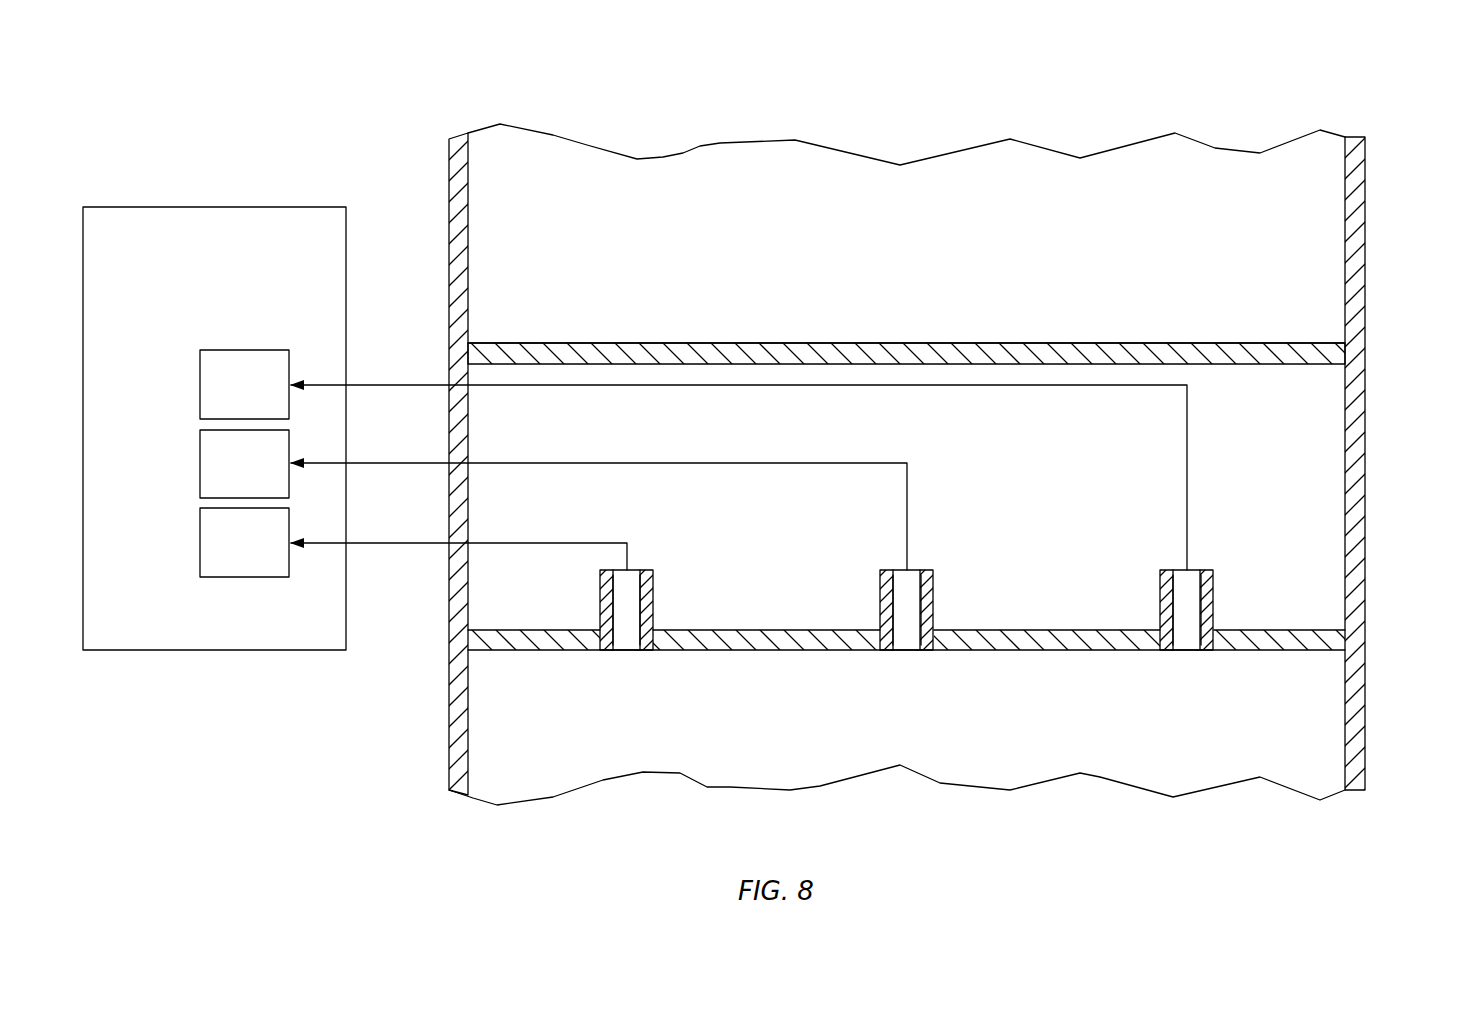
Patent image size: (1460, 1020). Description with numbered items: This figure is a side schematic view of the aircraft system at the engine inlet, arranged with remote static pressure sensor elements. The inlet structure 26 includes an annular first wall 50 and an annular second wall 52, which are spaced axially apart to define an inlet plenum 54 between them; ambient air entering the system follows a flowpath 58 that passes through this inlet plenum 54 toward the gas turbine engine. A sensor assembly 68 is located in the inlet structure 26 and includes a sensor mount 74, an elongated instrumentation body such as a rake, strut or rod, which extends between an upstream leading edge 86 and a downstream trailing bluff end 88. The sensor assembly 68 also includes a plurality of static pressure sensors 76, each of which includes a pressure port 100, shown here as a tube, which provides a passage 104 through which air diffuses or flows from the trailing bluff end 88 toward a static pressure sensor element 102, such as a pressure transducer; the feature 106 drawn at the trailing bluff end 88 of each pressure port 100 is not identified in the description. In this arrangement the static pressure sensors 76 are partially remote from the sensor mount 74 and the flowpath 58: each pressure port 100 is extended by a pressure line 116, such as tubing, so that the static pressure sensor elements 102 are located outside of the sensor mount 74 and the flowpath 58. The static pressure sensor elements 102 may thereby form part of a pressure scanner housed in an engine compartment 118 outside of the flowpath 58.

The inlet structure 26 is at (1390, 123).
The first wall 50 is at (447, 190).
The second wall 52 is at (1367, 190).
The inlet plenum 54 is at (947, 232).
The flowpath 58 is at (997, 755).
The sensor assembly 68 is at (912, 302).
The sensor mount 74 is at (1086, 342).
The static pressure sensor 76 is at (191, 346).
The leading edge 86 is at (847, 342).
The trailing bluff end 88 is at (790, 652).
The pressure port 100 is at (600, 592).
The static pressure sensor element 102 is at (268, 400).
The passage 104 is at (632, 613).
The opening 106 is at (627, 652).
The pressure line 116 is at (722, 386).
The engine compartment 118 is at (200, 626).